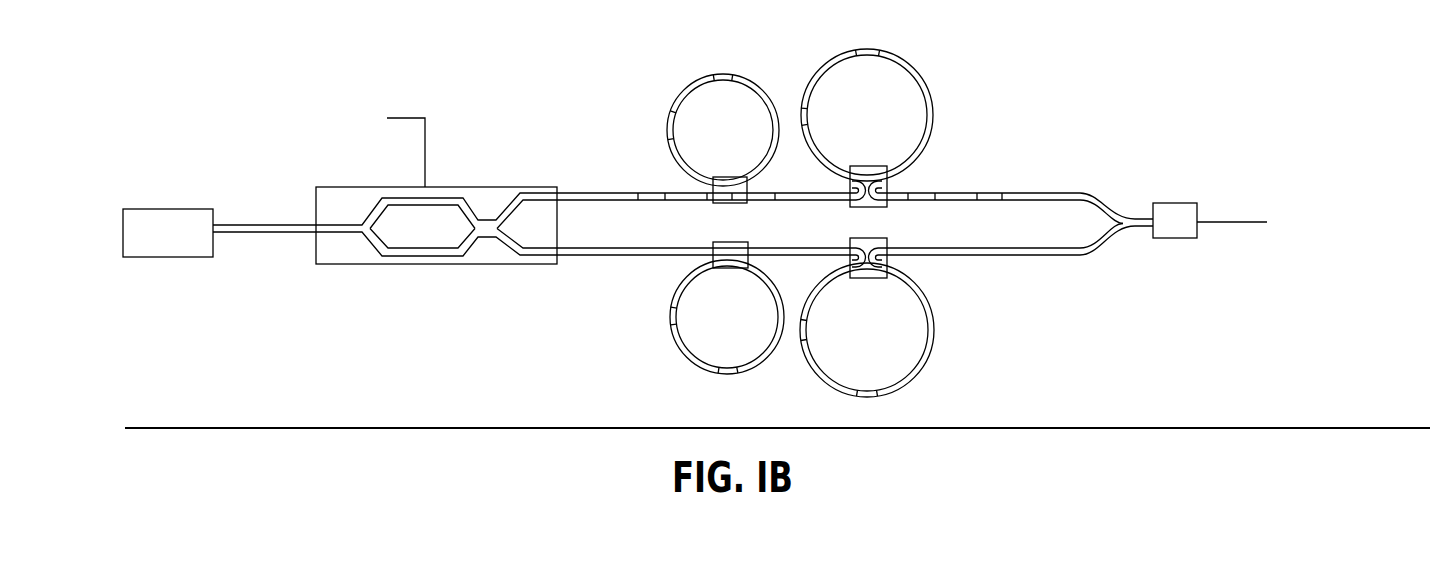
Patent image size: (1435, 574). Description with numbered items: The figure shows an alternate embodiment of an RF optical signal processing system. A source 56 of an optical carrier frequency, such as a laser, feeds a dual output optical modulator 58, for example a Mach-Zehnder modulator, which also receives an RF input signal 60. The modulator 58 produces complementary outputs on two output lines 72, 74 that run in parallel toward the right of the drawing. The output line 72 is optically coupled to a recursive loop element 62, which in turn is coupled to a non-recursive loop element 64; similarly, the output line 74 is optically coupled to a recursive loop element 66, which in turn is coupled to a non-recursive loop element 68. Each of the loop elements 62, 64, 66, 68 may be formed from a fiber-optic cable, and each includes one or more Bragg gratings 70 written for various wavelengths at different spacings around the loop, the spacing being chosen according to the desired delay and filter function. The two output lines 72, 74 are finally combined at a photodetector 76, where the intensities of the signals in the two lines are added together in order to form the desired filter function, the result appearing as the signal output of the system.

The source 56 is at (144, 208).
The dual output optical modulator 58 is at (315, 267).
The RF input signal 60 is at (400, 116).
The recursive loop element 62 is at (673, 110).
The non-recursive loop element 64 is at (921, 78).
The recursive loop element 66 is at (670, 327).
The non-recursive loop element 68 is at (926, 312).
The Bragg gratings 70 is at (928, 113).
The output line 72 is at (571, 191).
The output line 74 is at (585, 251).
The photodetector 76 is at (1175, 198).